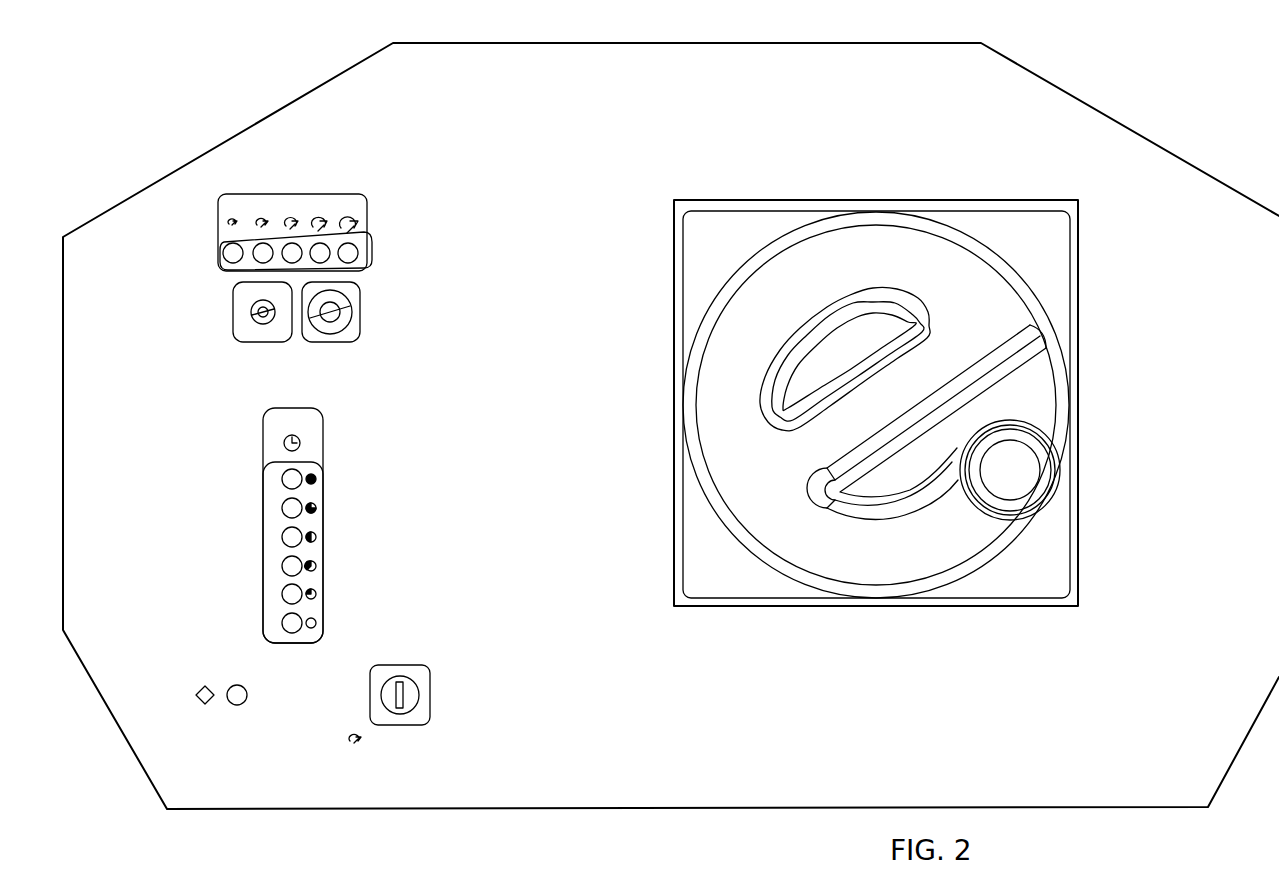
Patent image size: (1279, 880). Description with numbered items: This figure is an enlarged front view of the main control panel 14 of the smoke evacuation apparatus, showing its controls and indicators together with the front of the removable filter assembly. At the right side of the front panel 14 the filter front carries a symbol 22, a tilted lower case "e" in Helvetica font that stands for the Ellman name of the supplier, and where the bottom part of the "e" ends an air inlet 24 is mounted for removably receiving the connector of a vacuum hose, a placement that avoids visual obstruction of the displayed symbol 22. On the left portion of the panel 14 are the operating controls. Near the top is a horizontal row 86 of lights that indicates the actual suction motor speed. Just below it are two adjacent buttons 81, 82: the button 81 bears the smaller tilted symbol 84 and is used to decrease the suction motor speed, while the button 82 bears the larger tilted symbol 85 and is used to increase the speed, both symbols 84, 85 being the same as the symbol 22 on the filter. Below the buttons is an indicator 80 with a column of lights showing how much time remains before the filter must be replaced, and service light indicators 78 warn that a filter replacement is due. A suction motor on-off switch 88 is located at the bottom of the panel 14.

The main control panel 14 is at (775, 779).
The symbol 22 is at (918, 568).
The air inlet 24 is at (1050, 452).
The service light indicators 78 is at (220, 705).
The indicator 80 is at (320, 552).
The button 81 is at (235, 338).
The button 82 is at (360, 335).
The smaller tilted symbol 84 is at (265, 325).
The larger tilted symbol 85 is at (330, 333).
The horizontal row of lights 86 is at (362, 240).
The suction motor on-off switch 88 is at (407, 725).